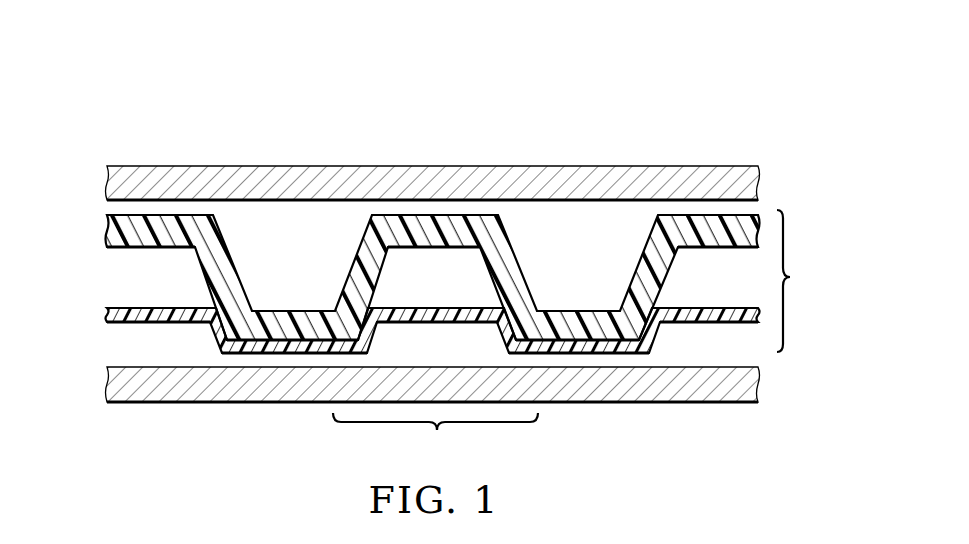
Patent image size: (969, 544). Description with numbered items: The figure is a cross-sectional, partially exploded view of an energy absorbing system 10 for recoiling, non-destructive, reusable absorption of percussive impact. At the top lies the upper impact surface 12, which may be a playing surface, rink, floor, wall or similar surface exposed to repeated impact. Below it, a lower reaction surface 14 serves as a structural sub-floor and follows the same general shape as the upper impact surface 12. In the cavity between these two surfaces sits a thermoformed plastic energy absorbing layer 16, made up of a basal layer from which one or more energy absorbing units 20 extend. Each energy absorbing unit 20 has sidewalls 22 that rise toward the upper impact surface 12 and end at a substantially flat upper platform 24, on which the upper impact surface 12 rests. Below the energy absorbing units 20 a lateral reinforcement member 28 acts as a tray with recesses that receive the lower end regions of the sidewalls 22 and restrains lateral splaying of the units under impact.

The energy absorbing system 10 is at (170, 101).
The upper impact surface 12 is at (760, 186).
The lower reaction surface 14 is at (760, 389).
The energy absorbing layer 16 is at (798, 281).
The energy absorbing unit 20 is at (435, 436).
The sidewall 22 is at (218, 271).
The upper platform 24 is at (435, 207).
The lateral reinforcement member 28 is at (173, 323).